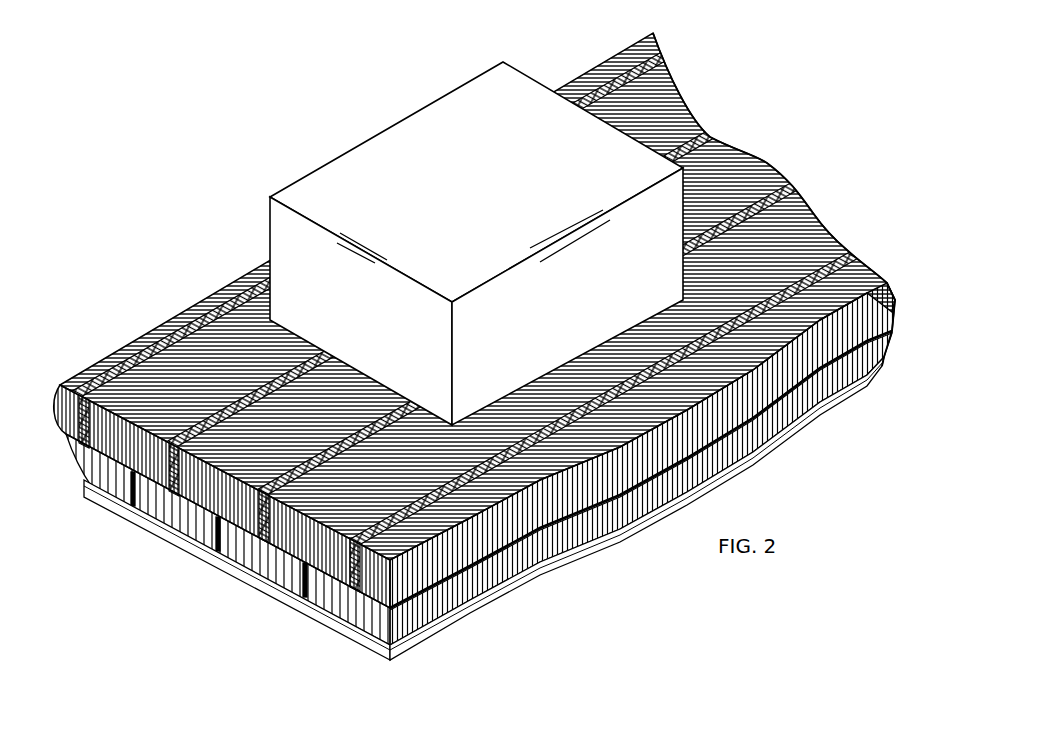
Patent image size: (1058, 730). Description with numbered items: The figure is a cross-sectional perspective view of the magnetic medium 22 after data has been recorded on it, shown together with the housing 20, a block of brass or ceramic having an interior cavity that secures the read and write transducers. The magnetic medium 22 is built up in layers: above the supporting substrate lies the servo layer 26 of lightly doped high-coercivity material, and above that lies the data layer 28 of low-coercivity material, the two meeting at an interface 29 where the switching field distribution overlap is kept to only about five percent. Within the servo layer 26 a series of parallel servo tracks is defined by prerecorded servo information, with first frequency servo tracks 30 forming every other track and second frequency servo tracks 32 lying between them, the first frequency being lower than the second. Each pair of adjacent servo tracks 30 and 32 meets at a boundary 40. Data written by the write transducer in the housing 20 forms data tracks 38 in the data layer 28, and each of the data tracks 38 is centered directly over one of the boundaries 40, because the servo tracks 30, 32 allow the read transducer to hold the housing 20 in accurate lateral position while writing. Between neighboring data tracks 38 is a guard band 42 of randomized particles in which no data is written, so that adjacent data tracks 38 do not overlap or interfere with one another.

The housing 20 is at (352, 163).
The magnetic medium 22 is at (217, 283).
The servo layer 26 is at (459, 507).
The data layer 28 is at (52, 370).
The interface 29 is at (173, 525).
The first frequency servo tracks 30 is at (108, 477).
The second frequency servo tracks 32 is at (183, 533).
The data tracks 38 is at (150, 402).
The boundary 40 is at (123, 498).
The guard band 42 is at (657, 62).